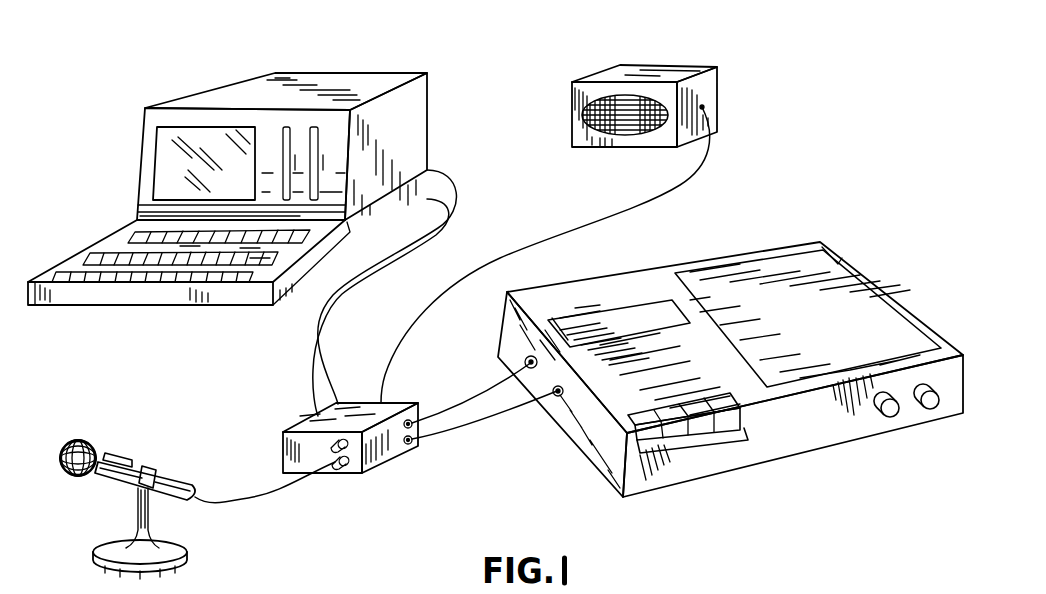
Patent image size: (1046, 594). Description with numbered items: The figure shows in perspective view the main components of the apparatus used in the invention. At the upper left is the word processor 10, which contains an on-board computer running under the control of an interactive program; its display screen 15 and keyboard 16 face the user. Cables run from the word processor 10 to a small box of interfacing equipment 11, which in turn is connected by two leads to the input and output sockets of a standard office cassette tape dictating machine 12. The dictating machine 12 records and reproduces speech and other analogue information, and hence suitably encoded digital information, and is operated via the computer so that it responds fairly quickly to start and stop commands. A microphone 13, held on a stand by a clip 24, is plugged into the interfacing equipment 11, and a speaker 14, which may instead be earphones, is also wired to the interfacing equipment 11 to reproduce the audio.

The word processor 10 is at (316, 82).
The interfacing equipment 11 is at (381, 451).
The cassette tape dictating machine 12 is at (788, 442).
The microphone 13 is at (122, 472).
The speaker 14 is at (647, 73).
The display screen 15 is at (168, 153).
The keyboard 16 is at (137, 262).
The microphone clip 24 is at (122, 457).